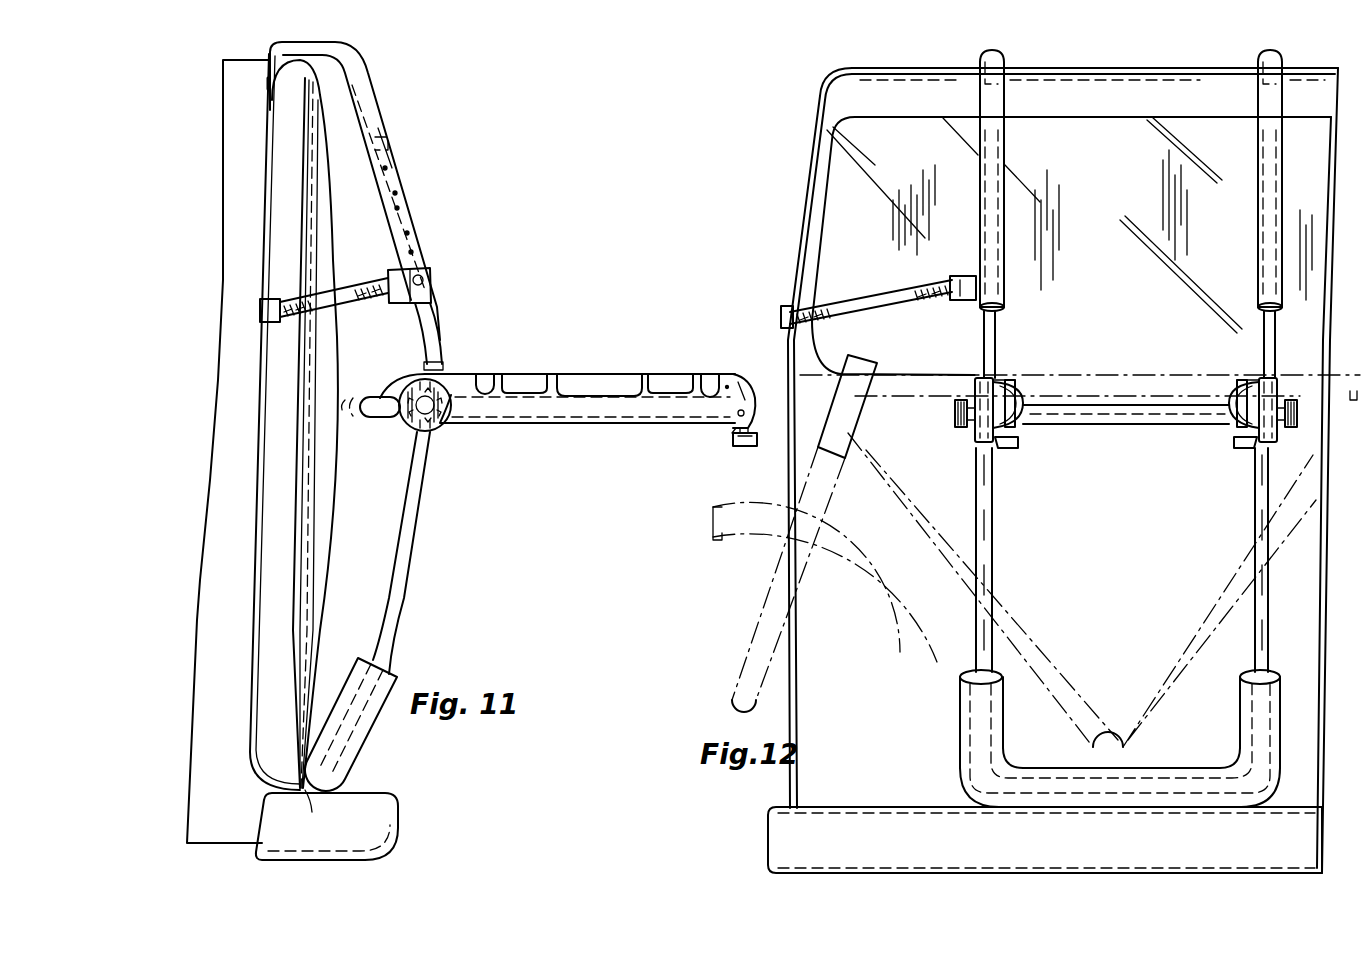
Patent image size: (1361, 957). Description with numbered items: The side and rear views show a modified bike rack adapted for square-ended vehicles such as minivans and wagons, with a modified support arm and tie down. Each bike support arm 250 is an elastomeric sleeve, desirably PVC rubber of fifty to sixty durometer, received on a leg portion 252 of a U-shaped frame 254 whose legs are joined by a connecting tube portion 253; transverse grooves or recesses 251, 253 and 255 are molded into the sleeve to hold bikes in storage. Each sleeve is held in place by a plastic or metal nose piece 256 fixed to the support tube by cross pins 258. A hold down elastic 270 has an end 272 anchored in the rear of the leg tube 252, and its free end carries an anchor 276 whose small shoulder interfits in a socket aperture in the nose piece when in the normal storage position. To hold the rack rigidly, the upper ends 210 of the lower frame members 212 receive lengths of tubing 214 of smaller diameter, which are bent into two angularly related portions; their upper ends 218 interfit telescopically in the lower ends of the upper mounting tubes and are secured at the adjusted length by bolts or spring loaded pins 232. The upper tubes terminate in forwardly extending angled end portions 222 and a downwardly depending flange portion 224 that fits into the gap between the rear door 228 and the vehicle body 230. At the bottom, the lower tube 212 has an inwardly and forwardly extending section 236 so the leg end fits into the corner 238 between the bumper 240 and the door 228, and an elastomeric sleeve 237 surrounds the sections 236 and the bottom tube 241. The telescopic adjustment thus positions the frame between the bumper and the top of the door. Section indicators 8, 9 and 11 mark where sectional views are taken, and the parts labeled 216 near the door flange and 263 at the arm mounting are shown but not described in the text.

In FIG. 12, the section line 8- 8 is at (1010, 354).
In FIG. 11, the section line 9- 9 is at (366, 393).
In FIG. 11, the section line 11- 11 is at (402, 193).
In FIG. 11, the upper ends of lower frame members 210 is at (383, 130).
In FIG. 12, the upper ends of lower frame members 210 is at (1006, 138).
In FIG. 11, the lower frame member 212 is at (414, 506).
In FIG. 12, the lower frame member 212 is at (994, 532).
In FIG. 11, the tubing 214 is at (441, 326).
In FIG. 12, the tubing 214 is at (992, 332).
In FIG. 11, the seal strip 216 is at (268, 90).
In FIG. 11, the upper end of tubing 218 is at (432, 303).
In FIG. 12, the upper end of tubing 218 is at (992, 318).
In FIG. 11, the angled end portion 222 is at (355, 45).
In FIG. 12, the angled end portion 222 is at (1003, 55).
In FIG. 11, the flange portion 224 is at (268, 70).
In FIG. 12, the flange portion 224 is at (1005, 82).
In FIG. 11, the rear door 228 is at (290, 193).
In FIG. 11, the body 230 is at (226, 155).
In FIG. 11, the bolts or spring loaded pins 232 is at (386, 168).
In FIG. 11, the inwardly and forwardly extending section 236 is at (400, 644).
In FIG. 12, the inwardly and forwardly extending section 236 is at (982, 613).
In FIG. 12, the elastomeric sleeve 237 is at (1112, 797).
In FIG. 11, the corner 238 is at (316, 812).
In FIG. 12, the corner 238 is at (823, 790).
In FIG. 11, the bumper 240 is at (378, 793).
In FIG. 12, the bumper 240 is at (770, 830).
In FIG. 12, the bottom tube 241 is at (1188, 780).
In FIG. 11, the bike support arm 250 is at (607, 404).
In FIG. 12, the bike support arm 250 is at (1022, 386).
In FIG. 11, the transverse groove 251 is at (490, 375).
In FIG. 11, the leg portion 252 is at (716, 419).
In FIG. 11, the connecting tube portion 253 is at (383, 414).
In FIG. 12, the connecting tube portion 253 is at (1150, 427).
In FIG. 11, the U-shaped frame 254 is at (547, 395).
In FIG. 11, the transverse recess 255 is at (703, 376).
In FIG. 11, the nose piece 256 is at (742, 390).
In FIG. 12, the nose piece 256 is at (1018, 426).
In FIG. 11, the cross pin 258 is at (734, 430).
In FIG. 12, the pivot axis 263 is at (1022, 400).
In FIG. 11, the hold down elastic 270 is at (615, 385).
In FIG. 12, the hold down elastic 270 is at (1008, 380).
In FIG. 11, the end of hold down elastic 272 is at (381, 392).
In FIG. 11, the anchor 276 is at (743, 447).